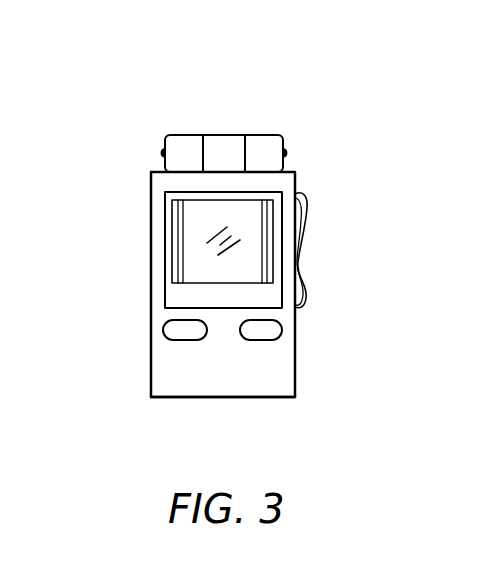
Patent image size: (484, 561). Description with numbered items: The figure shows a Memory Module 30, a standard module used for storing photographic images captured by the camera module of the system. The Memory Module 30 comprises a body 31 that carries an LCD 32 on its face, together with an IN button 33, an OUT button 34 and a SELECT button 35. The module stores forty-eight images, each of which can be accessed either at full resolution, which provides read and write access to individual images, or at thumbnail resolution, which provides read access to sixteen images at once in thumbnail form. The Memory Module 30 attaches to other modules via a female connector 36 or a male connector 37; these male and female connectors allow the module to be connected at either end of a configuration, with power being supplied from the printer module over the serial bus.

The Memory Module 30 is at (315, 113).
The body 31 is at (296, 379).
The LCD 32 is at (195, 234).
The IN button 33 is at (178, 330).
The OUT button 34 is at (268, 331).
The SELECT button 35 is at (306, 210).
The female connector 36 is at (172, 398).
The male connector 37 is at (165, 144).